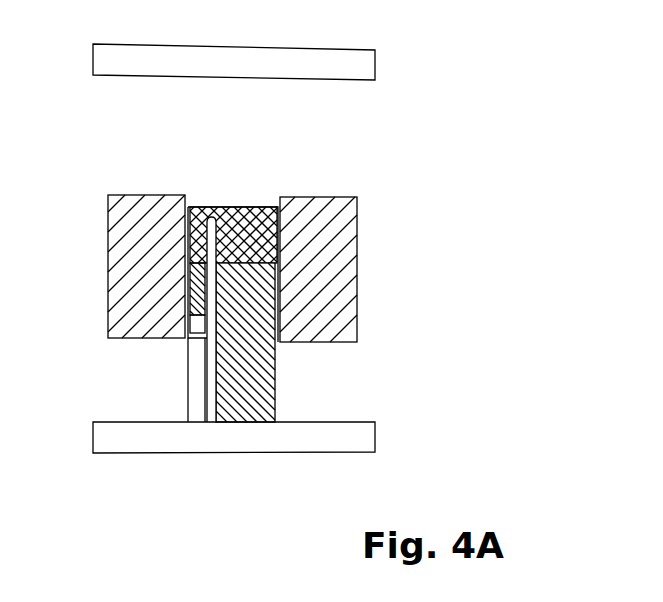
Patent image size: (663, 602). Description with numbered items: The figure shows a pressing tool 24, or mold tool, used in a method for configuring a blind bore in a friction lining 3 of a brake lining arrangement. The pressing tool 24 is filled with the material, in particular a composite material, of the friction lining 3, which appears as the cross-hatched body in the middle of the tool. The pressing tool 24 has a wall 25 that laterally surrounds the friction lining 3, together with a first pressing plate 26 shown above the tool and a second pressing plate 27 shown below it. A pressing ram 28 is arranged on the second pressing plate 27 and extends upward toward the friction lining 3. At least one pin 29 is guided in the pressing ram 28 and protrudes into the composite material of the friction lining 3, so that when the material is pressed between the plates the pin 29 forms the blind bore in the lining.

The pressing tool 24 is at (472, 92).
The first pressing plate 26 is at (112, 58).
The wall 25 is at (337, 232).
The friction lining 3 is at (235, 223).
The pressing ram 28 is at (255, 383).
The pin 29 is at (197, 343).
The second pressing plate 27 is at (355, 440).